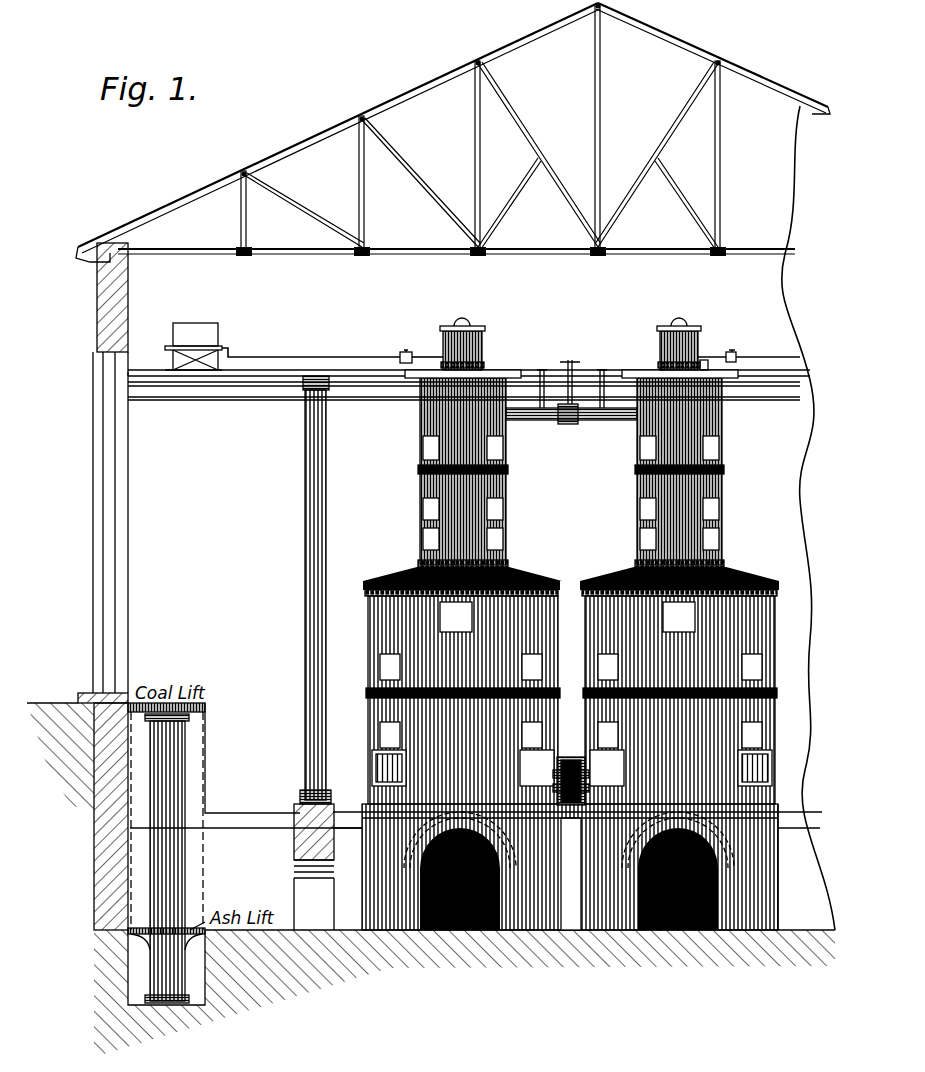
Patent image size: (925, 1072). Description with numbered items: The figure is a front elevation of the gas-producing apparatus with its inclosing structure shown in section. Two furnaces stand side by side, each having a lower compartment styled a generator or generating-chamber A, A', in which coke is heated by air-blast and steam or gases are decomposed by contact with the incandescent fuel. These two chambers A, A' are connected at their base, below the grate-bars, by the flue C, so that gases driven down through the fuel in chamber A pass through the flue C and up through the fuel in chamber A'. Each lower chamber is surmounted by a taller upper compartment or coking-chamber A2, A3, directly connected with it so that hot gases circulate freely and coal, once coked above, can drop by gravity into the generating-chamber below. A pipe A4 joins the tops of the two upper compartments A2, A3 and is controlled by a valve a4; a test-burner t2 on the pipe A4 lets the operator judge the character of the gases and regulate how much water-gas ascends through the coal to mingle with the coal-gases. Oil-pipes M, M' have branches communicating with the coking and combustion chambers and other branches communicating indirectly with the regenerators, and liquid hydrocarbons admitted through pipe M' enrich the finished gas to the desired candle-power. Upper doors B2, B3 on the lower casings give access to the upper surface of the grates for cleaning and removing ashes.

The generating-chamber A is at (571, 760).
The generating-chamber A' is at (449, 700).
The upper compartment A2 is at (670, 442).
The upper compartment A3 is at (422, 480).
The pipe A4 is at (571, 425).
The upper door B2 is at (762, 768).
The upper door B3 is at (376, 768).
The flue C is at (571, 764).
The oil-pipe M is at (749, 348).
The oil-pipe M' is at (398, 343).
The test-burner t2 is at (572, 379).
The valve a4 is at (578, 377).